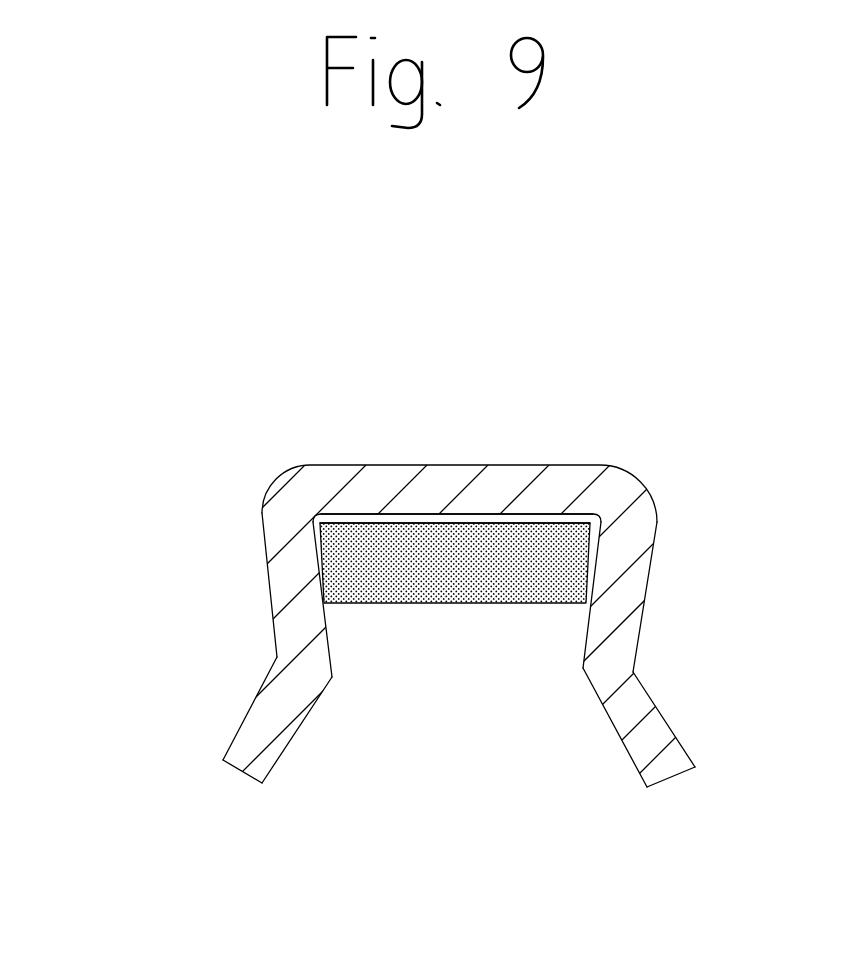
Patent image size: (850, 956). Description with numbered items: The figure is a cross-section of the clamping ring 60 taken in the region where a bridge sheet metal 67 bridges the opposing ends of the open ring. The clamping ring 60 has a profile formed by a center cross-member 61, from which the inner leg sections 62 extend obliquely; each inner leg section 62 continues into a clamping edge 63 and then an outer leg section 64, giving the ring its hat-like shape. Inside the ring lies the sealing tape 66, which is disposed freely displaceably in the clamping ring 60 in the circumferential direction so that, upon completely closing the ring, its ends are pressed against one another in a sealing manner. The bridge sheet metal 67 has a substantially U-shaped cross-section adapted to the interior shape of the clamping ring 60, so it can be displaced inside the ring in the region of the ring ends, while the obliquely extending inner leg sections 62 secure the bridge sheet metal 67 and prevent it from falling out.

The clamping ring 60 is at (570, 492).
The center cross-member 61 is at (452, 522).
The inner leg section 62 is at (285, 577).
The clamping edge 63 is at (583, 676).
The outer leg section 64 is at (647, 747).
The sealing tape 66 is at (452, 523).
The bridge sheet metal 67 is at (370, 518).